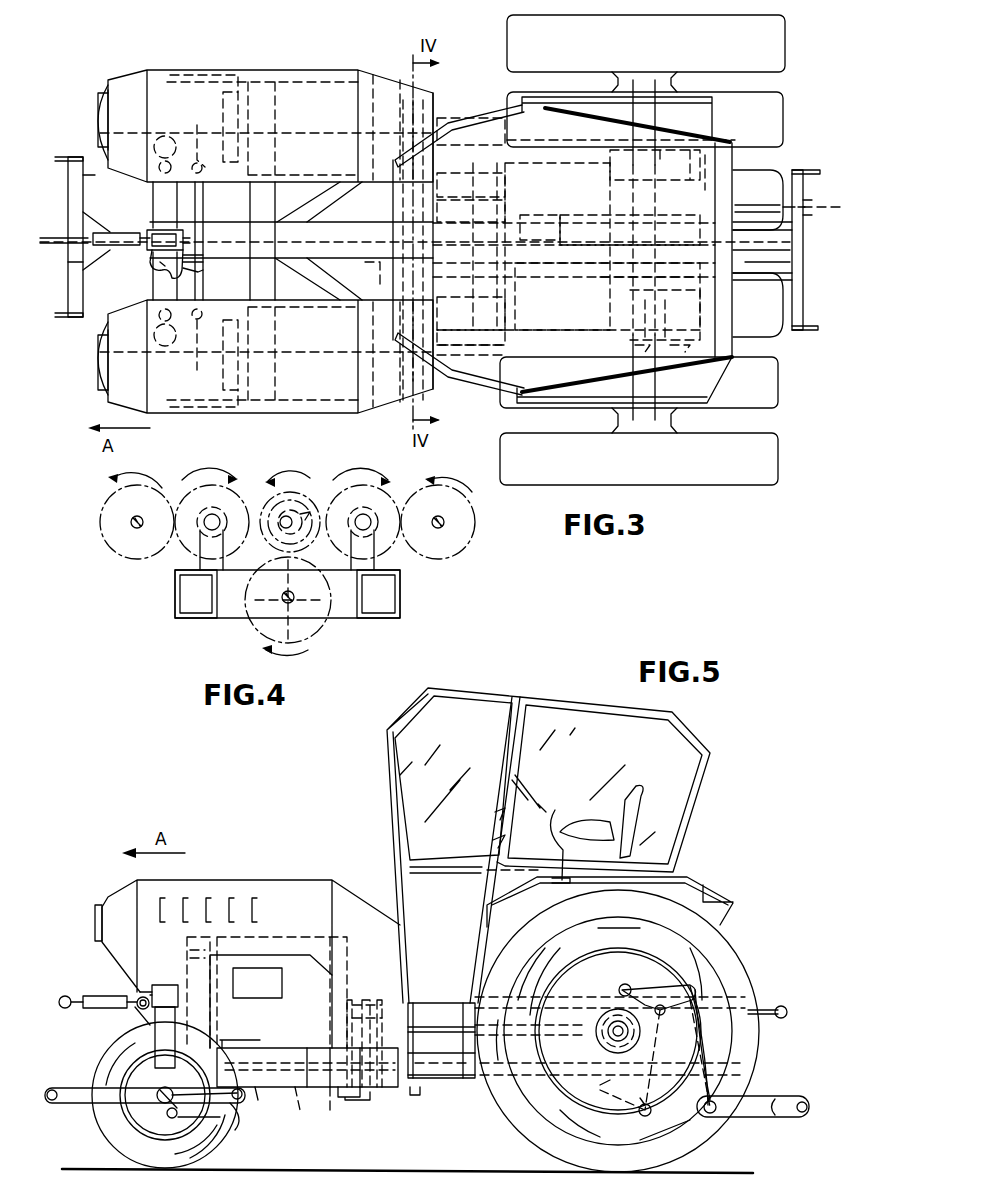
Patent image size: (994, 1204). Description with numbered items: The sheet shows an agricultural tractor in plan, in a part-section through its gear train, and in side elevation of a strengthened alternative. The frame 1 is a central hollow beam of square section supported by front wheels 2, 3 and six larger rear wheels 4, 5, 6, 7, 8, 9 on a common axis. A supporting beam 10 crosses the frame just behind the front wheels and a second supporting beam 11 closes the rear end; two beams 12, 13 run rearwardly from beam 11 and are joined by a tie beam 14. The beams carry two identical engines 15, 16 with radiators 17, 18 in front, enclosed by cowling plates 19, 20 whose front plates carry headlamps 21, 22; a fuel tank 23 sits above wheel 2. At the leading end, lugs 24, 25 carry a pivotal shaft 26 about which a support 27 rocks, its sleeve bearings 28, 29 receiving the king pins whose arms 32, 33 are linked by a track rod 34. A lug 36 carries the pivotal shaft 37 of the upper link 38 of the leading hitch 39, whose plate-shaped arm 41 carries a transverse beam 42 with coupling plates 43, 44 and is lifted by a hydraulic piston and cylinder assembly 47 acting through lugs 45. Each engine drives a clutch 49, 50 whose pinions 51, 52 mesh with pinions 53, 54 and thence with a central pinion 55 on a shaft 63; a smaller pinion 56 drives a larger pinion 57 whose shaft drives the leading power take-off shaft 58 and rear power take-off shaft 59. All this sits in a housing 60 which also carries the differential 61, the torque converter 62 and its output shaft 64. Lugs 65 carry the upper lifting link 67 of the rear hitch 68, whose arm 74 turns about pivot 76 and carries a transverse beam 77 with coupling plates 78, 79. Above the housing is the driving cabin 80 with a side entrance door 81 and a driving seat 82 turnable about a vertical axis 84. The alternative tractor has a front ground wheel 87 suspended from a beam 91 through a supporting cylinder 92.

In FIG. 3, the frame 1 is at (283, 226).
In FIG. 5, the frame 1 is at (262, 1089).
In FIG. 3, the front wheel 2 is at (95, 398).
In FIG. 3, the front wheel 3 is at (98, 74).
In FIG. 3, the rear wheel 4 is at (756, 487).
In FIG. 5, the rear wheel 4 is at (712, 1134).
In FIG. 3, the rear wheel 5 is at (772, 408).
In FIG. 3, the rear wheel 6 is at (802, 333).
In FIG. 3, the rear wheel 7 is at (772, 174).
In FIG. 3, the rear wheel 8 is at (507, 94).
In FIG. 3, the rear wheel 9 is at (507, 21).
In FIG. 3, the supporting beam 10 is at (288, 162).
In FIG. 5, the supporting beam 10 is at (238, 1036).
In FIG. 5, the second supporting beam 11 is at (330, 1107).
In FIG. 3, the beam 12 is at (475, 335).
In FIG. 4, the beam 12 is at (400, 597).
In FIG. 5, the beam 12 is at (390, 1090).
In FIG. 3, the beam 13 is at (476, 180).
In FIG. 4, the beam 13 is at (175, 590).
In FIG. 3, the tie beam 14 is at (520, 217).
In FIG. 4, the tie beam 14 is at (338, 618).
In FIG. 5, the tie beam 14 is at (415, 1100).
In FIG. 3, the internal combustion engine 15 is at (316, 385).
In FIG. 5, the internal combustion engine 15 is at (304, 942).
In FIG. 3, the internal combustion engine 16 is at (305, 94).
In FIG. 3, the radiator 17 is at (220, 380).
In FIG. 5, the radiator 17 is at (185, 952).
In FIG. 3, the radiator 18 is at (223, 96).
In FIG. 3, the cowling plates 19 is at (215, 413).
In FIG. 5, the cowling plates 19 is at (292, 880).
In FIG. 3, the cowling plates 20 is at (215, 70).
In FIG. 3, the headlamp 21 is at (95, 352).
In FIG. 5, the headlamp 21 is at (95, 922).
In FIG. 3, the headlamp 22 is at (95, 112).
In FIG. 3, the liquid fuel tank 23 is at (196, 163).
In FIG. 3, the vertical lug 24 is at (150, 257).
In FIG. 3, the vertical lug 25 is at (203, 260).
In FIG. 3, the pivotal shaft 26 is at (144, 285).
In FIG. 3, the support 27 is at (150, 214).
In FIG. 3, the sleeve bearing 28 is at (152, 352).
In FIG. 3, the sleeve bearing 29 is at (165, 136).
In FIG. 5, the sleeve bearing 29 is at (70, 1087).
In FIG. 3, the arm 32 is at (195, 346).
In FIG. 3, the arm 33 is at (197, 135).
In FIG. 3, the track rod 34 is at (203, 222).
In FIG. 3, the lug 36 is at (160, 280).
In FIG. 3, the pivotal shaft 37 is at (195, 277).
In FIG. 3, the upper link 38 is at (70, 240).
In FIG. 5, the upper link 38 is at (70, 996).
In FIG. 3, the leading three-point lifting device or hitch 39 is at (75, 264).
In FIG. 3, the plate-shaped arm 41 is at (346, 222).
In FIG. 3, the transverse beam 42 is at (112, 189).
In FIG. 3, the coupling plate 43 is at (75, 317).
In FIG. 3, the coupling plate 44 is at (68, 157).
In FIG. 5, the lugs 45 is at (150, 1122).
In FIG. 5, the hydraulic piston and cylinder assembly 47 is at (247, 1127).
In FIG. 3, the clutch 49 is at (370, 348).
In FIG. 3, the clutch 50 is at (370, 128).
In FIG. 3, the pinion 51 is at (437, 342).
In FIG. 4, the pinion 51 is at (472, 517).
In FIG. 5, the pinion 51 is at (386, 1000).
In FIG. 3, the pinion 52 is at (430, 127).
In FIG. 4, the pinion 52 is at (100, 517).
In FIG. 3, the pinion 53 is at (437, 312).
In FIG. 4, the pinion 53 is at (390, 494).
In FIG. 3, the pinion 54 is at (437, 188).
In FIG. 4, the pinion 54 is at (195, 490).
In FIG. 3, the central pinion 55 is at (437, 212).
In FIG. 4, the central pinion 55 is at (278, 492).
In FIG. 3, the second smaller toothed pinion 56 is at (368, 280).
In FIG. 4, the second smaller toothed pinion 56 is at (318, 494).
In FIG. 5, the second smaller toothed pinion 56 is at (360, 998).
In FIG. 4, the larger pinion 57 is at (252, 628).
In FIG. 5, the larger pinion 57 is at (355, 1100).
In FIG. 3, the leading power take-off shaft 58 is at (312, 222).
In FIG. 4, the leading power take-off shaft 58 is at (286, 588).
In FIG. 5, the leading power take-off shaft 58 is at (302, 1092).
In FIG. 3, the rear power take-off shaft 59 is at (607, 296).
In FIG. 4, the rear power take-off shaft 59 is at (293, 600).
In FIG. 5, the rear power take-off shaft 59 is at (478, 1090).
In FIG. 3, the housing 60 is at (585, 232).
In FIG. 5, the housing 60 is at (580, 997).
In FIG. 3, the differential 61 is at (678, 215).
In FIG. 5, the differential 61 is at (595, 1051).
In FIG. 3, the torque converter 62 is at (548, 215).
In FIG. 5, the torque converter 62 is at (425, 1012).
In FIG. 4, the shaft 63 is at (289, 532).
In FIG. 5, the rotary output shaft 64 is at (580, 1034).
In FIG. 3, the lugs 65 is at (675, 285).
In FIG. 3, the upper lifting link 67 is at (762, 222).
In FIG. 5, the upper lifting link 67 is at (770, 1008).
In FIG. 5, the rear three-point lifting device or hitch 68 is at (765, 1096).
In FIG. 3, the arm 74 is at (756, 282).
In FIG. 5, the pivot 76 is at (640, 1122).
In FIG. 3, the transverse beam 77 is at (806, 212).
In FIG. 3, the coupling plate 78 is at (806, 342).
In FIG. 3, the coupling plate 79 is at (803, 204).
In FIG. 3, the driving cabin 80 is at (727, 143).
In FIG. 5, the driving cabin 80 is at (545, 698).
In FIG. 5, the side entrance door 81 is at (420, 767).
In FIG. 5, the driving seat 82 is at (640, 794).
In FIG. 5, the vertical axis 84 is at (533, 829).
In FIG. 5, the front ground wheel 87 is at (100, 1117).
In FIG. 5, the beam 91 is at (160, 985).
In FIG. 5, the supporting cylinder 92 is at (150, 1014).